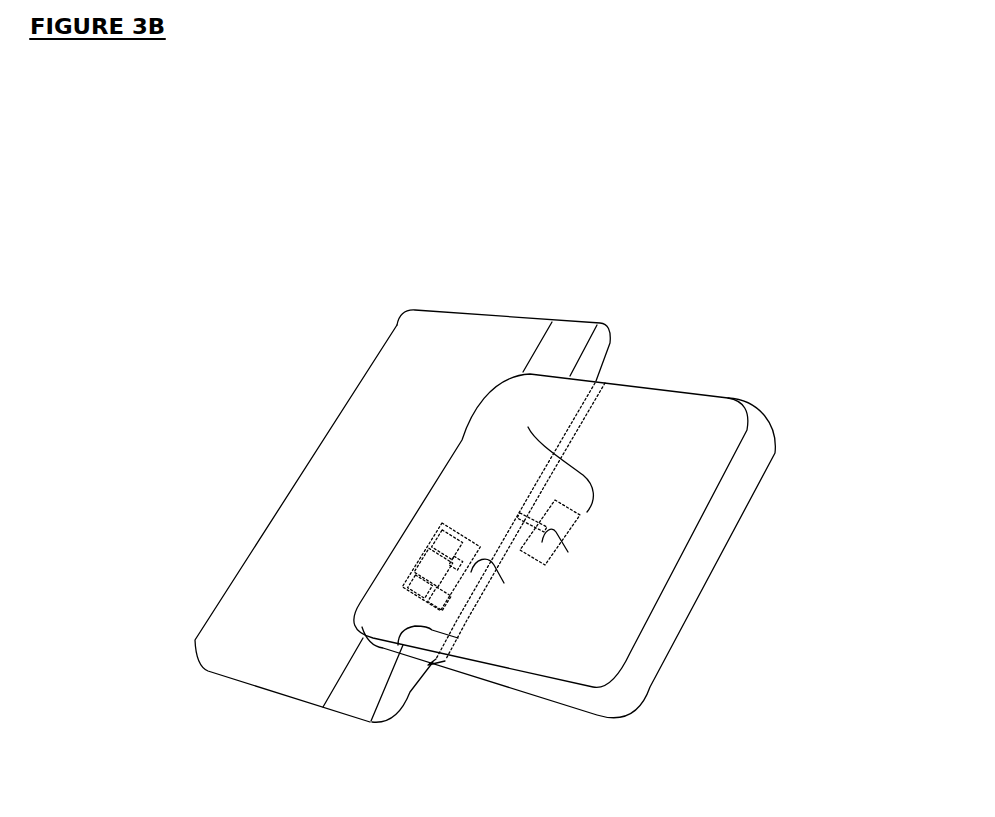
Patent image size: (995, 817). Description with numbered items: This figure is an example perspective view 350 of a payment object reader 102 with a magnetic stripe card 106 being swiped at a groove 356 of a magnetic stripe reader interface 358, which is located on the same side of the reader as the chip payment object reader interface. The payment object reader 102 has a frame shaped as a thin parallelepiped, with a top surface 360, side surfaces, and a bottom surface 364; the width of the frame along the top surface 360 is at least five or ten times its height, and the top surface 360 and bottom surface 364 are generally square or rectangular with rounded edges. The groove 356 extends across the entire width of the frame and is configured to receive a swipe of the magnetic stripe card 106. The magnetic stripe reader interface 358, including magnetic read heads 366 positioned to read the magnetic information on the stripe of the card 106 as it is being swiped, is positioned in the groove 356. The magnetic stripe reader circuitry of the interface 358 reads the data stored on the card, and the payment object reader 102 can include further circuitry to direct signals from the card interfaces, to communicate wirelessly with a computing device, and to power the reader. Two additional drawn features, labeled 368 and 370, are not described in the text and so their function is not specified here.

The perspective view 350 is at (414, 162).
The magnetic stripe card 106 is at (417, 310).
The payment object reader 102 is at (644, 386).
The groove 356 is at (409, 520).
The magnetic stripe reader interface 358 is at (478, 448).
The top surface 360 is at (623, 483).
The bottom surface 364 is at (559, 697).
The magnetic read heads 366 is at (460, 590).
The connector tab 368 is at (458, 638).
The electronic component 370 is at (557, 541).